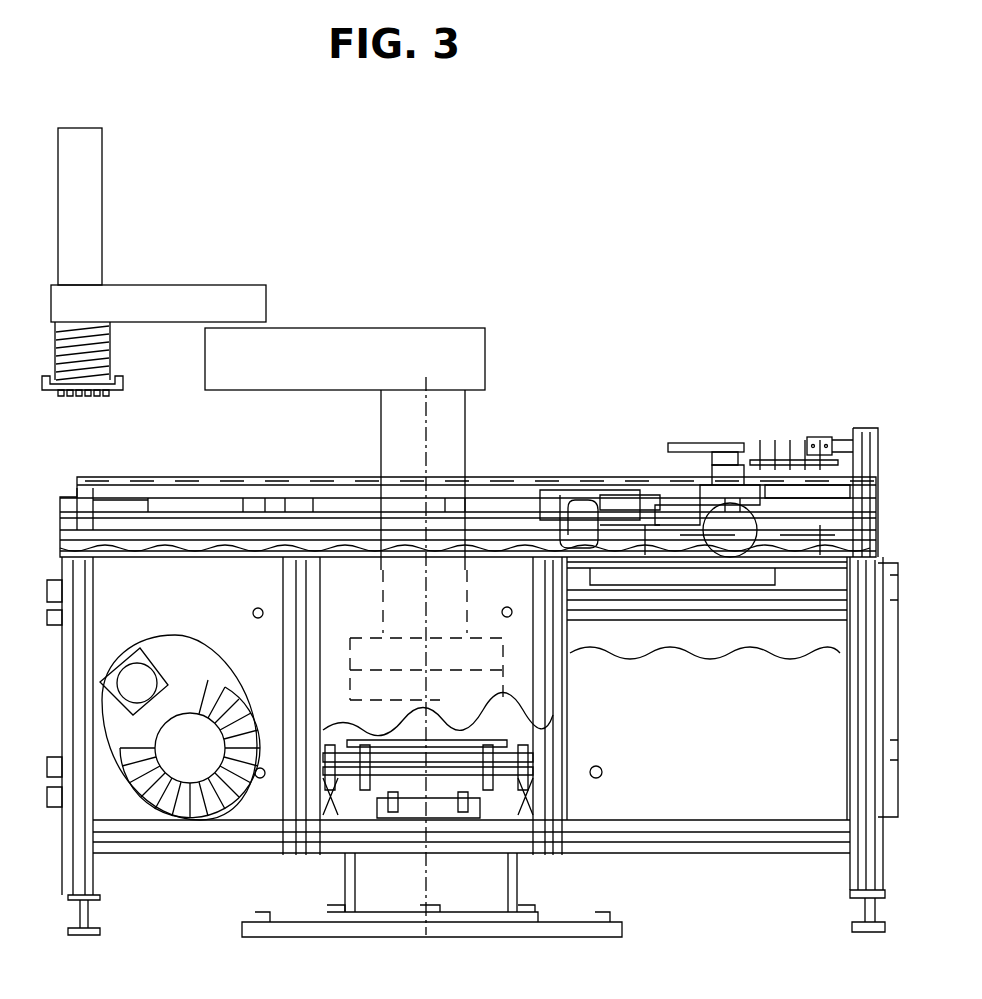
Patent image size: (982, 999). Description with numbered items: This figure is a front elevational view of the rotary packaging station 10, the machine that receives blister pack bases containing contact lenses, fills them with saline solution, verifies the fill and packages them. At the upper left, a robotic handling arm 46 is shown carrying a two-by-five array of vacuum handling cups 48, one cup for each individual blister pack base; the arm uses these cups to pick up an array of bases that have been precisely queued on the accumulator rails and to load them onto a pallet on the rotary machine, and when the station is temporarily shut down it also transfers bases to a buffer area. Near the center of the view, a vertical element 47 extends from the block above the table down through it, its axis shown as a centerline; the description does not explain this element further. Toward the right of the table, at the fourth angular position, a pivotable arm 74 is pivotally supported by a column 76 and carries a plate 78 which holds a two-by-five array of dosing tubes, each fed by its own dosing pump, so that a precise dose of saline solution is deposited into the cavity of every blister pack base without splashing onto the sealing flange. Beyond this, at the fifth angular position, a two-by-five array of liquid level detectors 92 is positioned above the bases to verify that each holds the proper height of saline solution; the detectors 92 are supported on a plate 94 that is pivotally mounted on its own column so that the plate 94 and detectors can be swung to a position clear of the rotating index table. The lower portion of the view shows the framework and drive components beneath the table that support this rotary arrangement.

The rotary packaging station 10 is at (606, 356).
The robotic handling arm 46 is at (165, 322).
The support post 47 is at (426, 433).
The vacuum handling cups 48 is at (62, 398).
The pivotable arm 74 is at (710, 443).
The column 76 is at (748, 455).
The plate 78 is at (684, 444).
The liquid level detectors 92 is at (785, 448).
The plate 94 is at (772, 447).